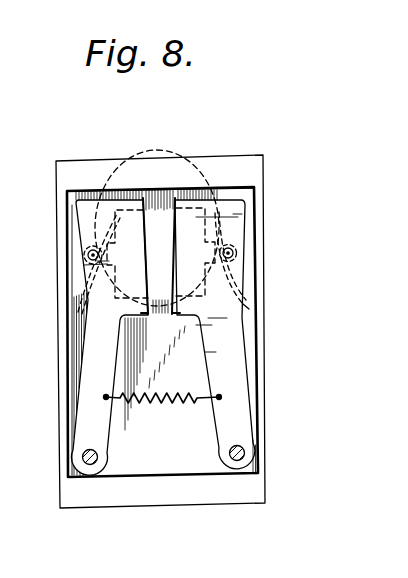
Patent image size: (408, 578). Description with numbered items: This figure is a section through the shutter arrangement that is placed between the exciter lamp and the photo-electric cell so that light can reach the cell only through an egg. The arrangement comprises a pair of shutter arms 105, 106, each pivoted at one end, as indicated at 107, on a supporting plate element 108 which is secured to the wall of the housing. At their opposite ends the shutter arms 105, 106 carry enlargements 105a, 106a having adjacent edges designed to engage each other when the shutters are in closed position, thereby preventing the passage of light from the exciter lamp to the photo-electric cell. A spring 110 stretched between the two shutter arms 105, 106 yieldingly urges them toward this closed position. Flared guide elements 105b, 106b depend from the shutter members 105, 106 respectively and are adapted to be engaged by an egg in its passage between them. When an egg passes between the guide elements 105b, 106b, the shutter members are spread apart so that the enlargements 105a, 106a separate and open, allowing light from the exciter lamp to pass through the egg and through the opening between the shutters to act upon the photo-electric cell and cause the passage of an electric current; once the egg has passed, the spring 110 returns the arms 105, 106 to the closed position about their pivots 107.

The shutter arm 105 is at (95, 357).
The shutter arm 106 is at (233, 360).
The enlargement 105a is at (122, 200).
The enlargement 106a is at (188, 198).
The flared guide element 105b is at (83, 289).
The flared guide element 106b is at (247, 285).
The pivot 107 is at (92, 466).
The supporting plate element 108 is at (262, 396).
The spring 110 is at (173, 402).